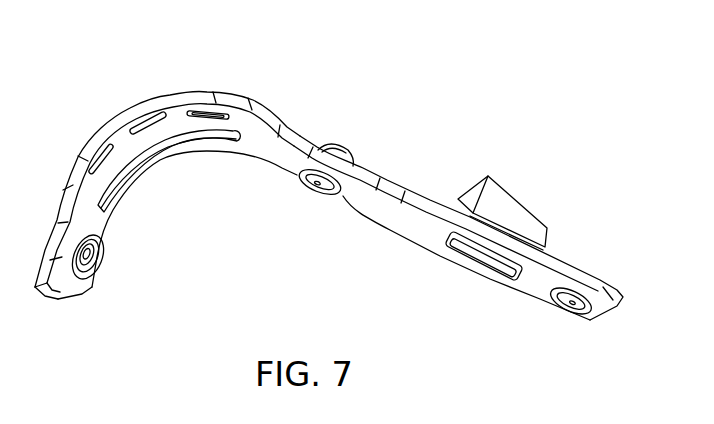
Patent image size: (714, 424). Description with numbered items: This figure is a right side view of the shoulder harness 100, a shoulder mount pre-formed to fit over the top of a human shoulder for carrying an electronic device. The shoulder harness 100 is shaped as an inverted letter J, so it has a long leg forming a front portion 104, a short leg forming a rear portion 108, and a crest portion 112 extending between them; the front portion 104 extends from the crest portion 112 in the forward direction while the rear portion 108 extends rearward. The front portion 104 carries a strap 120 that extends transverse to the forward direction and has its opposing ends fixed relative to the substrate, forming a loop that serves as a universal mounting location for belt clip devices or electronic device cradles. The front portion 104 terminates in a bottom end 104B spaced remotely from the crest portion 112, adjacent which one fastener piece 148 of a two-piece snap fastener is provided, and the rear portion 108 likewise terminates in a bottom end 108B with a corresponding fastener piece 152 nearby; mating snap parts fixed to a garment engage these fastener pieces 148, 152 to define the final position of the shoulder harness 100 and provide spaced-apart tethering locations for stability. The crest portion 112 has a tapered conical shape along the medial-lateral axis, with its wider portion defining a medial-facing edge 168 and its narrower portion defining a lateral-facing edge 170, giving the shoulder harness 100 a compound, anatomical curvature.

The shoulder harness 100 is at (382, 94).
The front portion 104 is at (612, 242).
The bottom end of the front portion 104B is at (605, 302).
The rear portion 108 is at (112, 300).
The bottom end of the rear portion 108B is at (63, 293).
The crest portion 112 is at (164, 58).
The strap 120 is at (520, 212).
The fastener piece 148 is at (566, 305).
The fastener piece 152 is at (96, 256).
The medial-facing edge 168 is at (94, 141).
The lateral-facing edge 170 is at (204, 157).